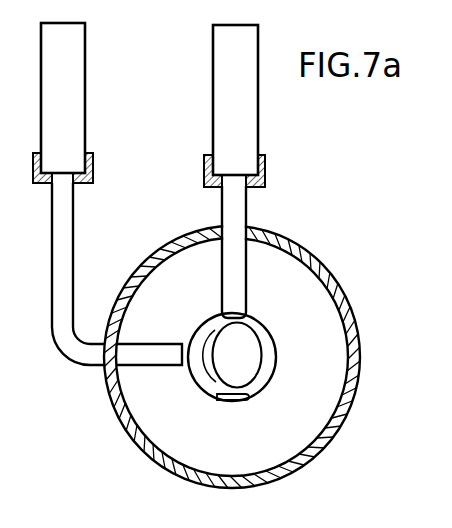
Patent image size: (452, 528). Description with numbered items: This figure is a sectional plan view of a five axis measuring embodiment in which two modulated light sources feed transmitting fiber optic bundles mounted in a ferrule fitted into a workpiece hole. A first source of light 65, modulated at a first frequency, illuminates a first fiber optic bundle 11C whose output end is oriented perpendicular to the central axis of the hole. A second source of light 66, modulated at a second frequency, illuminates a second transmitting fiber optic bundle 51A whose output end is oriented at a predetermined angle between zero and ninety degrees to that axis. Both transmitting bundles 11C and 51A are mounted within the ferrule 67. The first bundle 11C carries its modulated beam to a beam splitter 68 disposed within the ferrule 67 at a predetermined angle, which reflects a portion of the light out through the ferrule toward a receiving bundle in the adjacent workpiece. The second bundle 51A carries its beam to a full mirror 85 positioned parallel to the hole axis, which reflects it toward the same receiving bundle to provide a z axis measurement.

The first source of light 65 is at (85, 96).
The second source of light 66 is at (258, 114).
The first fiber optic bundle 11C is at (73, 218).
The second transmitting fiber optic bundle 51A is at (246, 212).
The ferrule 67 is at (318, 259).
The beam splitter 68 is at (254, 352).
The full mirror 85 is at (249, 392).